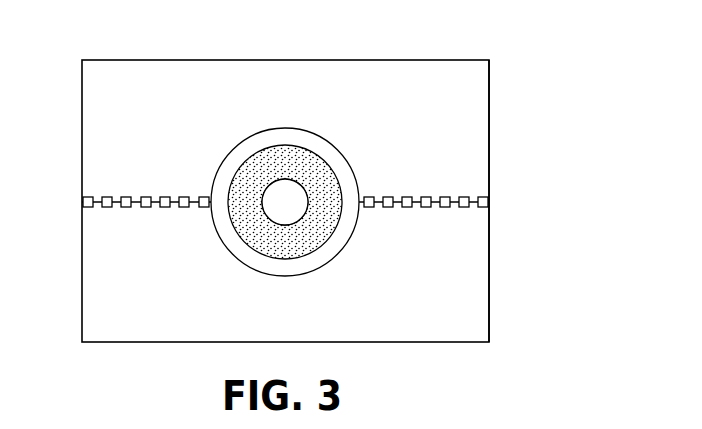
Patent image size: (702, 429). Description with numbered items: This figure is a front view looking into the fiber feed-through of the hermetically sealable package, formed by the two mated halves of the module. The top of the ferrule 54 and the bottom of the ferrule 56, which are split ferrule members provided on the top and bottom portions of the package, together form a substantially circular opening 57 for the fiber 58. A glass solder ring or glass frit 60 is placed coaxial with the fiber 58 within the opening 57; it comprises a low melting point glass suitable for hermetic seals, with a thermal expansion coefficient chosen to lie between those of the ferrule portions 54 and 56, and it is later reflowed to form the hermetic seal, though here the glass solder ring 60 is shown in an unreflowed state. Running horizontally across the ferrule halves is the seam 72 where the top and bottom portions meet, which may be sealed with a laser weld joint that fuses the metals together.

The split ferrule member 54 is at (383, 78).
The split ferrule member 56 is at (472, 264).
The substantially circular opening 57 is at (285, 128).
The fiber 58 is at (285, 200).
The glass solder ring 60 is at (245, 175).
The seam 72 is at (419, 186).